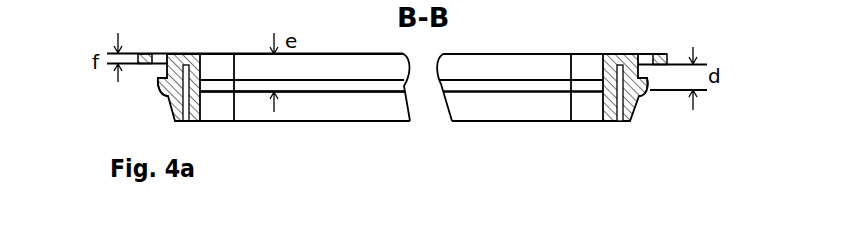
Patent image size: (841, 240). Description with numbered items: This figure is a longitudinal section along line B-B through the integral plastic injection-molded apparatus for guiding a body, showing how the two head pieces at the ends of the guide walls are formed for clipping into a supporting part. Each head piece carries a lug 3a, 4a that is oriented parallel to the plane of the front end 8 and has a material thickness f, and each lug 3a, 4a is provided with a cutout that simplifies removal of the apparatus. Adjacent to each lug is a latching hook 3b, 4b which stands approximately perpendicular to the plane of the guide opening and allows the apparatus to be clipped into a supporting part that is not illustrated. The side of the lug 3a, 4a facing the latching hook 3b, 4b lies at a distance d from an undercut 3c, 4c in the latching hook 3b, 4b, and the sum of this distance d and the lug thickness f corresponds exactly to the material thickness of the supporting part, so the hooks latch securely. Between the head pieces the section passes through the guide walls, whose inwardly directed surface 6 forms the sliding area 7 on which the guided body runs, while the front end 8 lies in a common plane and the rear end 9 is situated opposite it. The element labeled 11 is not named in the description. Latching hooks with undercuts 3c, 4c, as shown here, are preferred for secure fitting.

The lug 3a is at (148, 55).
The latching hook 3b is at (168, 103).
The undercut 3c is at (157, 81).
The lug 4a is at (660, 55).
The latching hook 4b is at (642, 103).
The undercut 4c is at (650, 85).
The inwardly directed surface 6 is at (388, 68).
The sliding area 7 is at (378, 108).
The front end 8 is at (492, 53).
The rear end 9 is at (512, 123).
The intermediate layer 11 is at (310, 85).